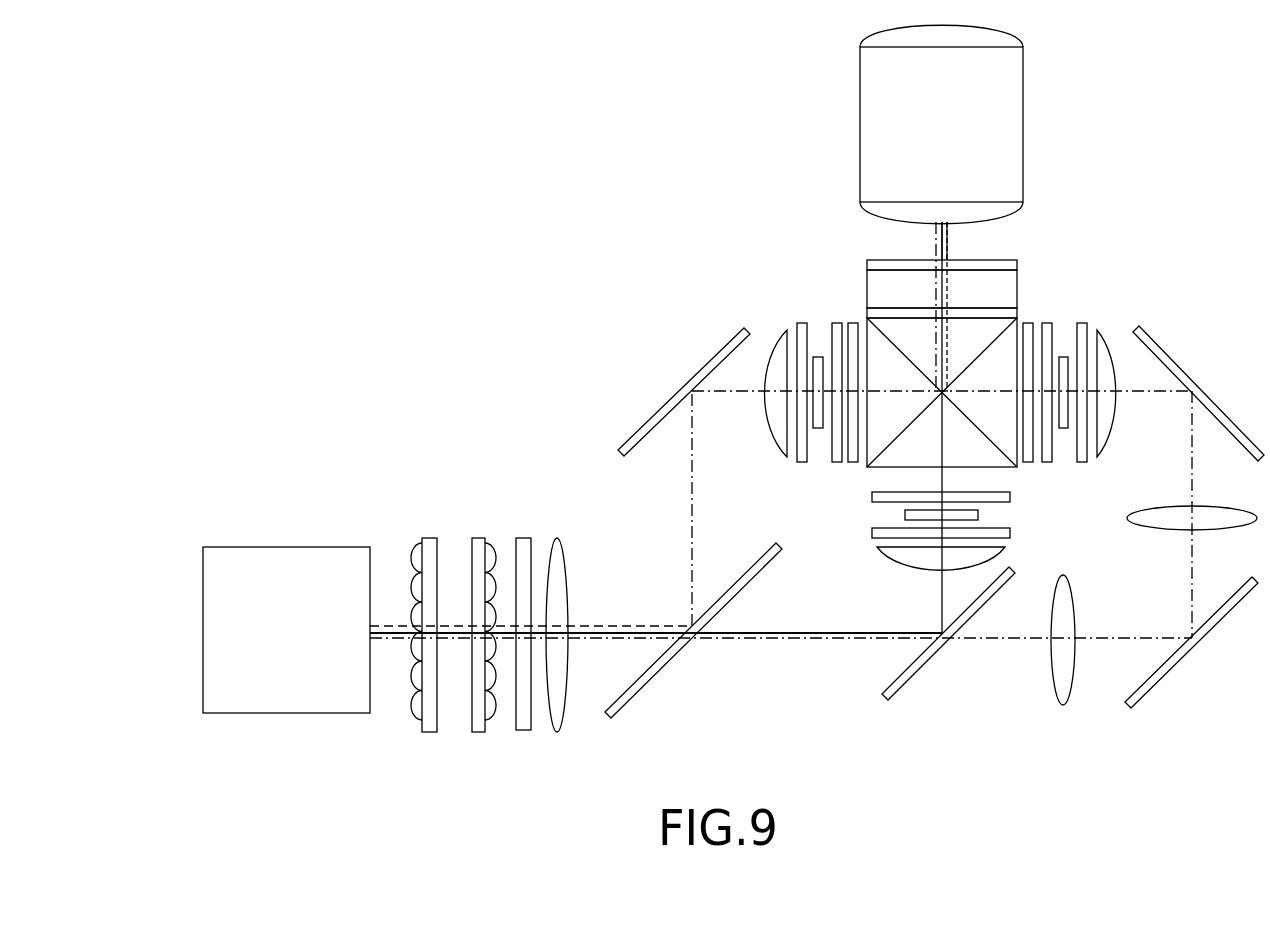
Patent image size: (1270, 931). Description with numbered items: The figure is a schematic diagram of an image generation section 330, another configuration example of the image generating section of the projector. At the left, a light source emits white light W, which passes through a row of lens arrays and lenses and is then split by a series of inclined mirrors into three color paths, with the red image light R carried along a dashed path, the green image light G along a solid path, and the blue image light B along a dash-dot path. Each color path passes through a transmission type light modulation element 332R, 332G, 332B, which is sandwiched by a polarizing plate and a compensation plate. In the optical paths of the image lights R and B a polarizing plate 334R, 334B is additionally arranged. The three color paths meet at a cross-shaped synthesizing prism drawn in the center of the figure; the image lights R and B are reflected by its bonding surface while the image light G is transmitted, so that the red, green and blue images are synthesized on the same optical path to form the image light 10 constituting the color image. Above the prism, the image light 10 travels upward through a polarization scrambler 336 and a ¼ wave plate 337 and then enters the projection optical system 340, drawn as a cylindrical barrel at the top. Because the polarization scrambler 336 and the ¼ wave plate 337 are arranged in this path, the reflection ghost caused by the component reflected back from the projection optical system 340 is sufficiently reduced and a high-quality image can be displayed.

The image light 10 is at (933, 239).
The image generation section 330 is at (894, 337).
The transmission type light modulation element 332R is at (818, 356).
The transmission type light modulation element 332G is at (905, 513).
The transmission type light modulation element 332B is at (1063, 429).
The polarizing plate 334R is at (852, 322).
The polarizing plate 334B is at (1028, 463).
The polarization scrambler 336 is at (1017, 314).
The ¼ wave plate 337 is at (1017, 262).
The projection optical system 340 is at (860, 116).
The image light R is at (692, 510).
The image light G is at (852, 630).
The image light B is at (1097, 636).
The white light W is at (392, 621).